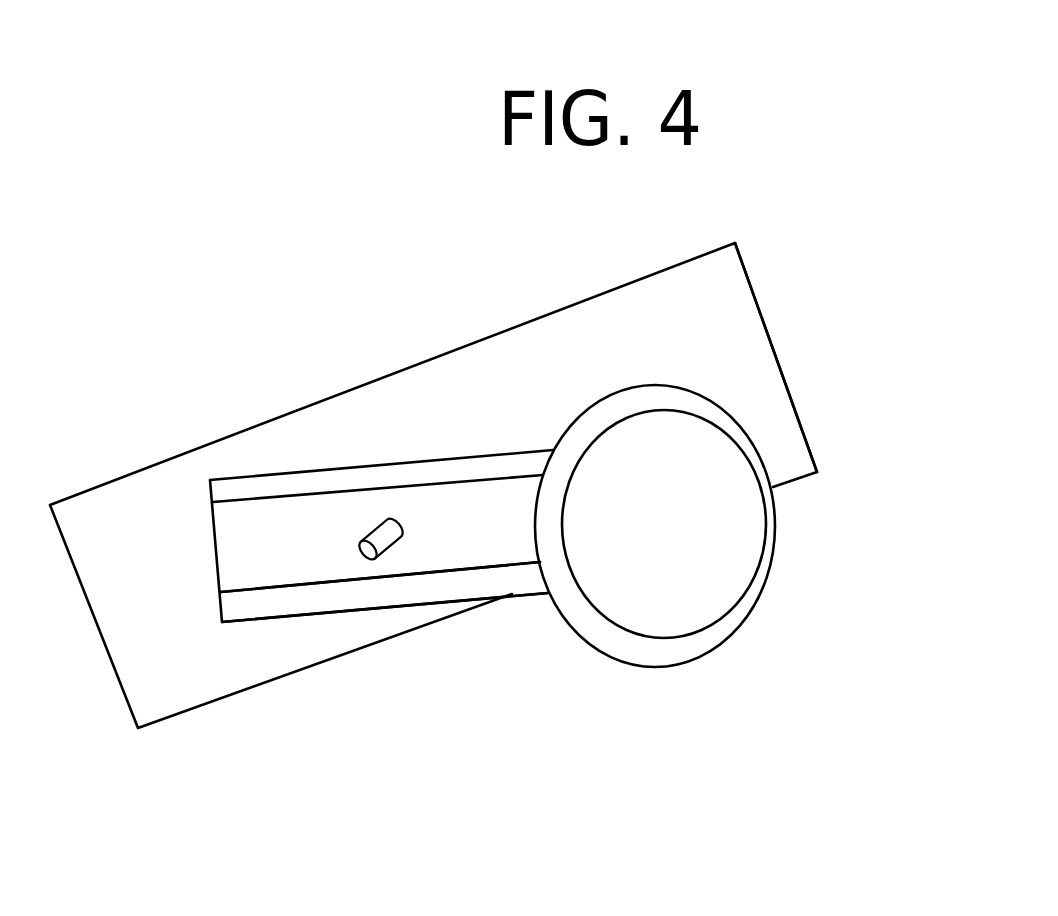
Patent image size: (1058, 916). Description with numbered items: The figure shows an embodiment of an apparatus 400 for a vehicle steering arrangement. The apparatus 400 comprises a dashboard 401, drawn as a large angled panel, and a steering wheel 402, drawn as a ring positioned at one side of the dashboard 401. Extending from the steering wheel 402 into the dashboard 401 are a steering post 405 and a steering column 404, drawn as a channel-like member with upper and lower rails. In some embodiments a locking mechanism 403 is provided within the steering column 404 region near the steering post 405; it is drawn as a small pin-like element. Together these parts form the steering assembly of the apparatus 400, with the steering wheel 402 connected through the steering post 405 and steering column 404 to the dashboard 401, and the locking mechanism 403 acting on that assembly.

The apparatus 400 is at (190, 320).
The dashboard 401 is at (780, 438).
The steering wheel 402 is at (762, 546).
The locking mechanism 403 is at (382, 568).
The steering column 404 is at (497, 578).
The steering post 405 is at (292, 553).